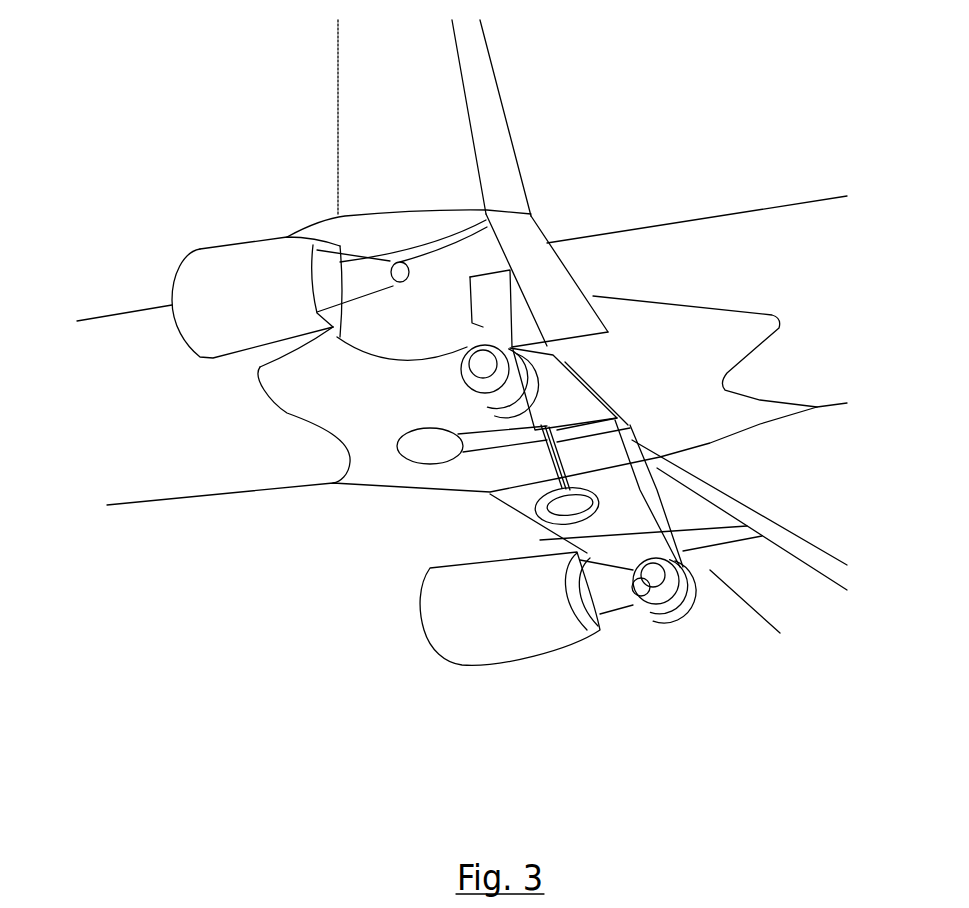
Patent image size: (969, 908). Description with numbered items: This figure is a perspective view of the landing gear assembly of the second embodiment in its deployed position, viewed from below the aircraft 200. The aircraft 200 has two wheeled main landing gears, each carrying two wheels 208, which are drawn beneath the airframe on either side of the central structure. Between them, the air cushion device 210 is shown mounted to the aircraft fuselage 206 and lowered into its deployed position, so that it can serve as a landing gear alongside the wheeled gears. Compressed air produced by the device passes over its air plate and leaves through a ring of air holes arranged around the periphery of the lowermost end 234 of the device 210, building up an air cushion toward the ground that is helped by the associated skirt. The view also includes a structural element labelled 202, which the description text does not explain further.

The aircraft 200 is at (660, 170).
The mast 202 is at (433, 75).
The aircraft fuselage 206 is at (795, 258).
The wheels 208 is at (507, 387).
The air cushion device 210 is at (550, 459).
The lowermost end 234 is at (620, 495).